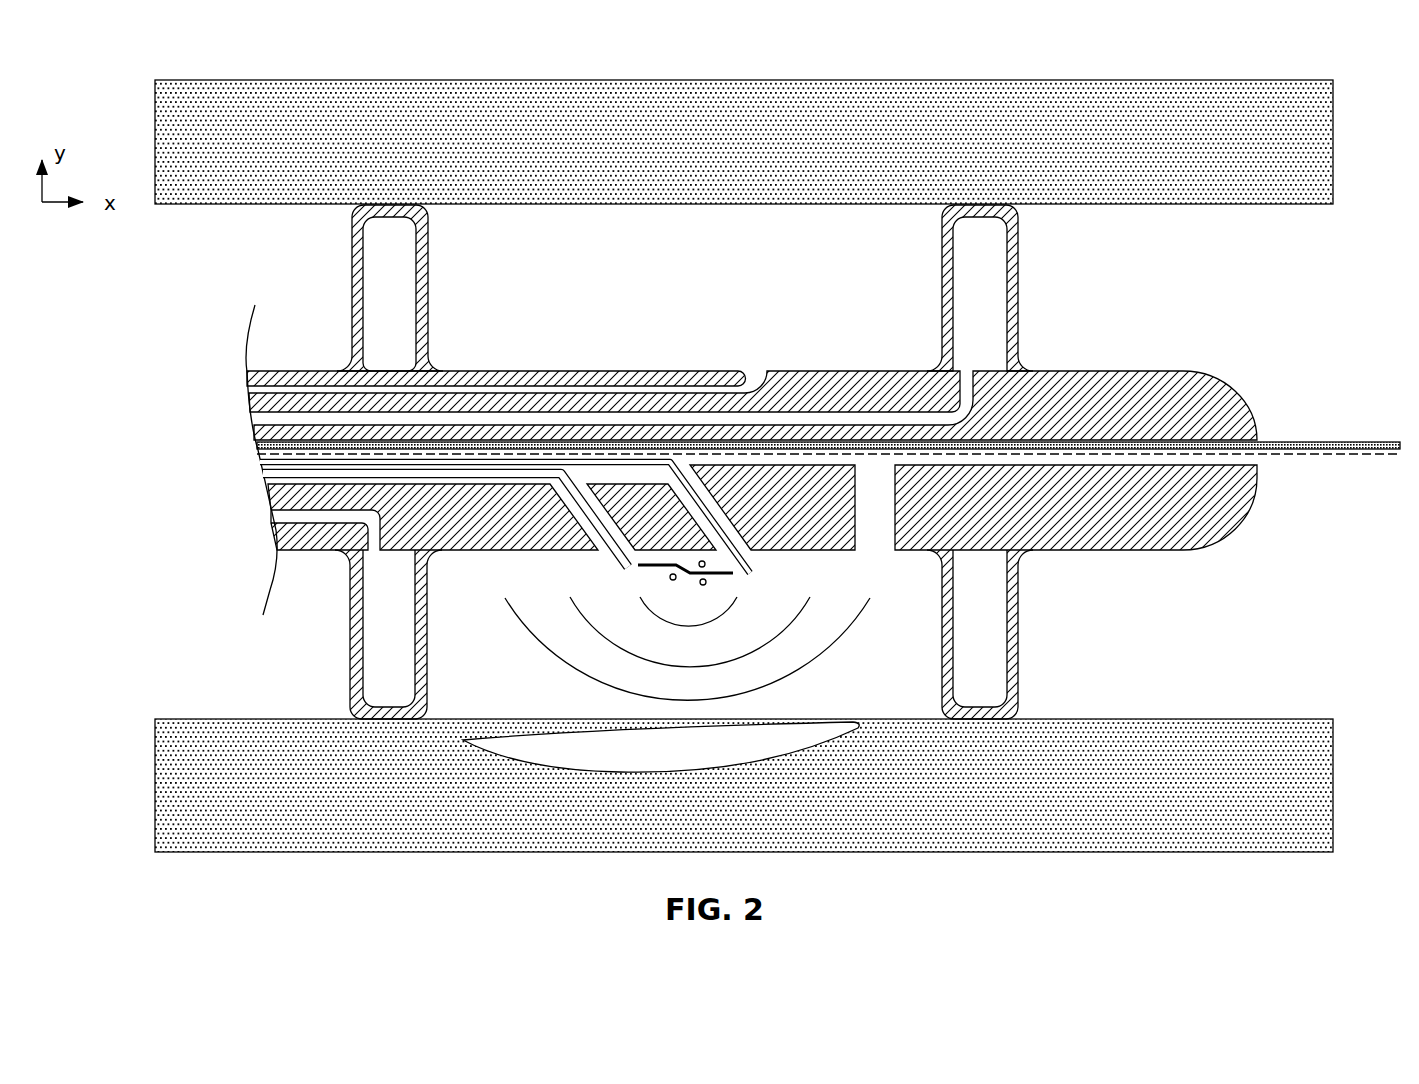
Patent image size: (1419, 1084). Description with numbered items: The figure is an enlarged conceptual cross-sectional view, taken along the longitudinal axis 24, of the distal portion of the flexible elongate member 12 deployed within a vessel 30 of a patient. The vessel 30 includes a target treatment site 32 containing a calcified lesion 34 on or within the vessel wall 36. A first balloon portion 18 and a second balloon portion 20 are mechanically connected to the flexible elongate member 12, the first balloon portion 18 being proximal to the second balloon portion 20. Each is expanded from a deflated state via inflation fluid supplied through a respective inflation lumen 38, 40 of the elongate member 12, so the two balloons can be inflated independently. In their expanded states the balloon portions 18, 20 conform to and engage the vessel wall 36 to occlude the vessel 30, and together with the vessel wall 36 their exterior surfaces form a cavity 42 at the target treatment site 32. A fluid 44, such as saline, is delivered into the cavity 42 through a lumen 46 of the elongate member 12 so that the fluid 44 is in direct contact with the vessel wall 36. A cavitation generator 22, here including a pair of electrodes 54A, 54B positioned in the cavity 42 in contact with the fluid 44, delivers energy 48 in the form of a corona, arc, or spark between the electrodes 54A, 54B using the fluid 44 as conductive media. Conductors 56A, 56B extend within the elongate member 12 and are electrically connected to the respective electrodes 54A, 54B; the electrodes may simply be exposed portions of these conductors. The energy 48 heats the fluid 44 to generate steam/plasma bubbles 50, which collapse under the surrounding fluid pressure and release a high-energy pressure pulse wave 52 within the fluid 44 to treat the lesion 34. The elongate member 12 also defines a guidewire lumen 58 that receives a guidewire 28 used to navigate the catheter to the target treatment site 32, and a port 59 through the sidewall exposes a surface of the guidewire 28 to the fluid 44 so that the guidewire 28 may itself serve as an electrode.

The flexible elongate member 12 is at (1152, 362).
The first balloon portion 18 is at (357, 290).
The second balloon portion 20 is at (946, 290).
The cavitation generator 22 is at (676, 622).
The longitudinal axis 24 is at (1338, 456).
The guidewire 28 is at (1398, 440).
The vessel 30 is at (204, 737).
The target treatment site 32 is at (531, 687).
The calcified lesion 34 is at (687, 761).
The vessel wall 36 is at (303, 705).
The inflation lumen 38 is at (268, 521).
The inflation lumen 40 is at (245, 419).
The cavity 42 is at (597, 283).
The fluid 44 is at (725, 306).
The lumen 46 is at (243, 389).
The energy 48 is at (672, 568).
The steam/plasma bubbles 50 is at (706, 586).
The pressure pulse wave 52 is at (828, 662).
The electrode 54A is at (625, 567).
The electrode 54B is at (749, 575).
The conductor 56A is at (267, 478).
The conductor 56B is at (263, 464).
The guidewire lumen 58 is at (1268, 470).
The port 59 is at (879, 556).